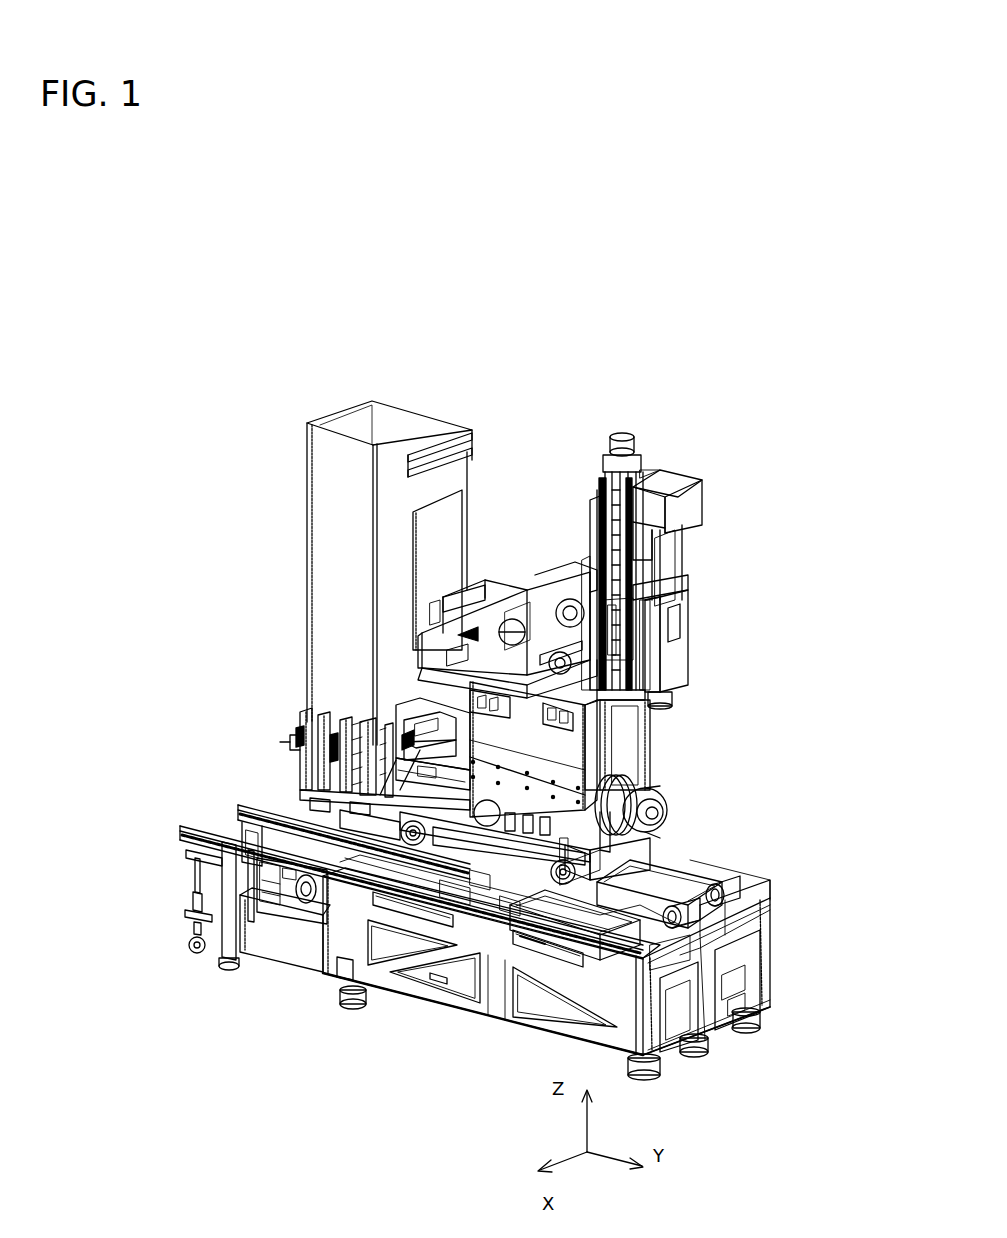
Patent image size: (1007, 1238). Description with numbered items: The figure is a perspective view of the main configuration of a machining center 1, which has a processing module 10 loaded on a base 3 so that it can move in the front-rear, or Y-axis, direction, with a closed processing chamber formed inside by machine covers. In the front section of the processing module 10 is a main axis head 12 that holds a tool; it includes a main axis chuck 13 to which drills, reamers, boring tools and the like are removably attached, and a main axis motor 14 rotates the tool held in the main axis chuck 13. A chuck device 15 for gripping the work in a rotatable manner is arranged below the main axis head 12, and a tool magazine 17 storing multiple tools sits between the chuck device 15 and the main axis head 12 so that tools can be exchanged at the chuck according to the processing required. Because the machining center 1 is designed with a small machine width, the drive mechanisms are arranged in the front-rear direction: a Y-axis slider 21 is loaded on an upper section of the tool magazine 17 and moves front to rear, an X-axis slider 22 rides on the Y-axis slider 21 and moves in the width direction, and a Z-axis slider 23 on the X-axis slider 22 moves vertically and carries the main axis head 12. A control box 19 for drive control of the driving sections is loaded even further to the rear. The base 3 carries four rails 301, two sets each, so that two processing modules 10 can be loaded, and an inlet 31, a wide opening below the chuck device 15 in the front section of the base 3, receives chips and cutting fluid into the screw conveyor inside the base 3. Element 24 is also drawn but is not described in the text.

The machining center 1 is at (489, 347).
The processing module 10 is at (552, 462).
The control box 19 is at (332, 536).
The Y-axis slider 21 is at (517, 588).
The X-axis slider 22 is at (578, 566).
The main axis motor 14 is at (672, 478).
The main axis head 12 is at (672, 622).
The Z-axis slider 23 is at (625, 665).
The main axis chuck 13 is at (668, 706).
The tool magazine 17 is at (628, 741).
The chuck device 15 is at (660, 792).
The tool changer 24 is at (478, 742).
The rails 301 is at (262, 800).
The base 3 is at (497, 963).
The inlet 31 is at (690, 885).